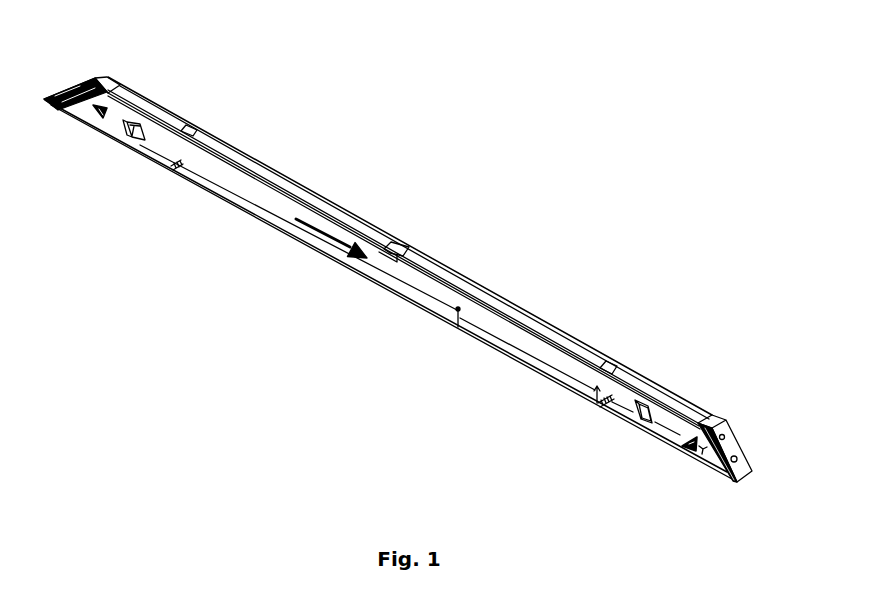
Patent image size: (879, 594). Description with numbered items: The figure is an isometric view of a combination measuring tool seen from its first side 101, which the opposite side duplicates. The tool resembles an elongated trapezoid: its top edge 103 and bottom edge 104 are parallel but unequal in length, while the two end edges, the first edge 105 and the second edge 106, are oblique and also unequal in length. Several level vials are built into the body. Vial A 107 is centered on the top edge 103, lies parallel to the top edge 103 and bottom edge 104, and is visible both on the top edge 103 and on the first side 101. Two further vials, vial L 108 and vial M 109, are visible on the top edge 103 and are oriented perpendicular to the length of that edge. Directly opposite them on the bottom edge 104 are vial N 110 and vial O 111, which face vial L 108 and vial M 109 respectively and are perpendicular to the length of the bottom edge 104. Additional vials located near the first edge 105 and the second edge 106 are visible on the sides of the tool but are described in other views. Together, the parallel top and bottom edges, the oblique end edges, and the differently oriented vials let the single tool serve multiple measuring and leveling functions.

The first side 101 is at (250, 252).
The top edge 103 is at (435, 270).
The bottom edge 104 is at (400, 287).
The first edge 105 is at (79, 85).
The second edge 106 is at (731, 442).
The vial A 107 is at (402, 245).
The vial L 108 is at (194, 126).
The vial M 109 is at (608, 360).
The vial N 110 is at (178, 167).
The vial O 111 is at (607, 412).